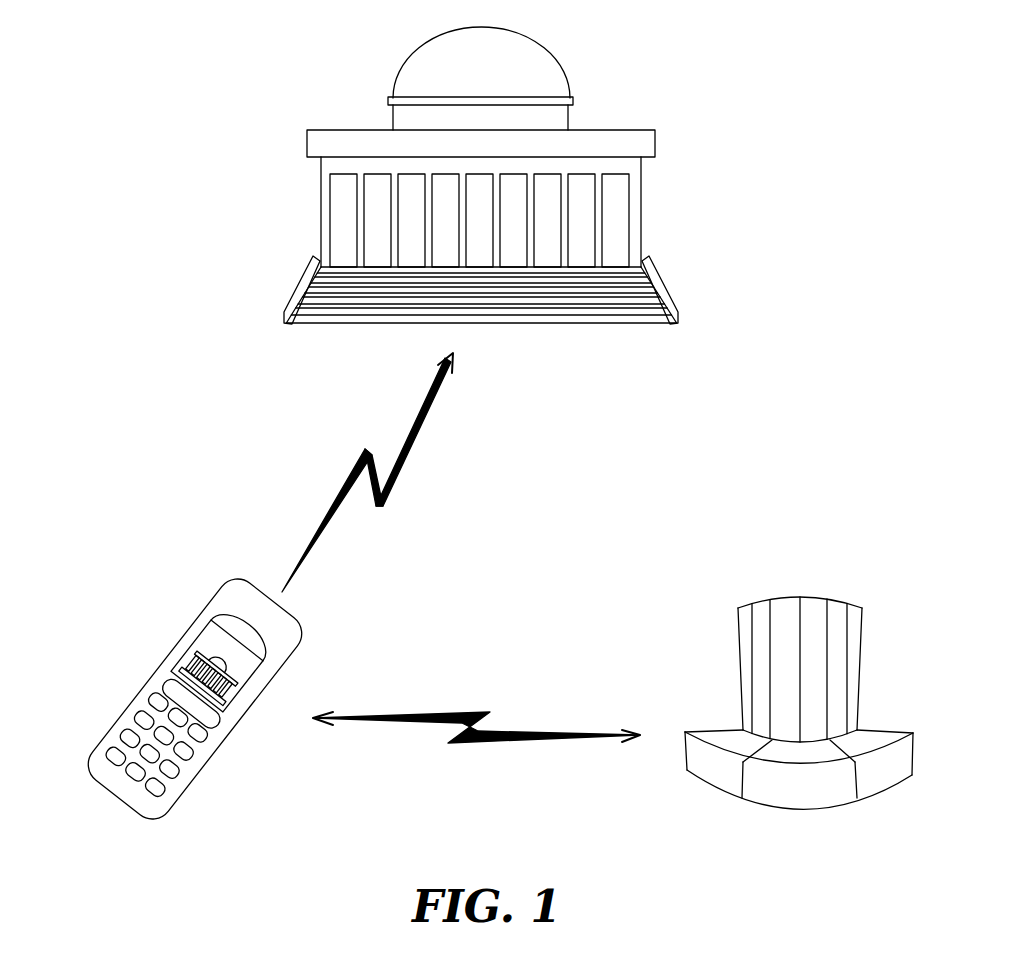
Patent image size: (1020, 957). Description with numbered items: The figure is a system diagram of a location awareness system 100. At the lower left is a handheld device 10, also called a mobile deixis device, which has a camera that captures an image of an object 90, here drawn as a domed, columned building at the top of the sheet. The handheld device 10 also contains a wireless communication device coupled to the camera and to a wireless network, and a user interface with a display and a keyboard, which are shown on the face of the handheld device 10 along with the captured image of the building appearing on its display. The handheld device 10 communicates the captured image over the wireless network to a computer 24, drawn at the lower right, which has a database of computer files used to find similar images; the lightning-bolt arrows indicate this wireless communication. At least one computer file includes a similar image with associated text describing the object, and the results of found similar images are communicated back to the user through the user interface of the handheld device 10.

The handheld device 10 is at (163, 597).
The object 90 is at (642, 128).
The computer 24 is at (805, 596).
The location awareness system 100 is at (704, 474).